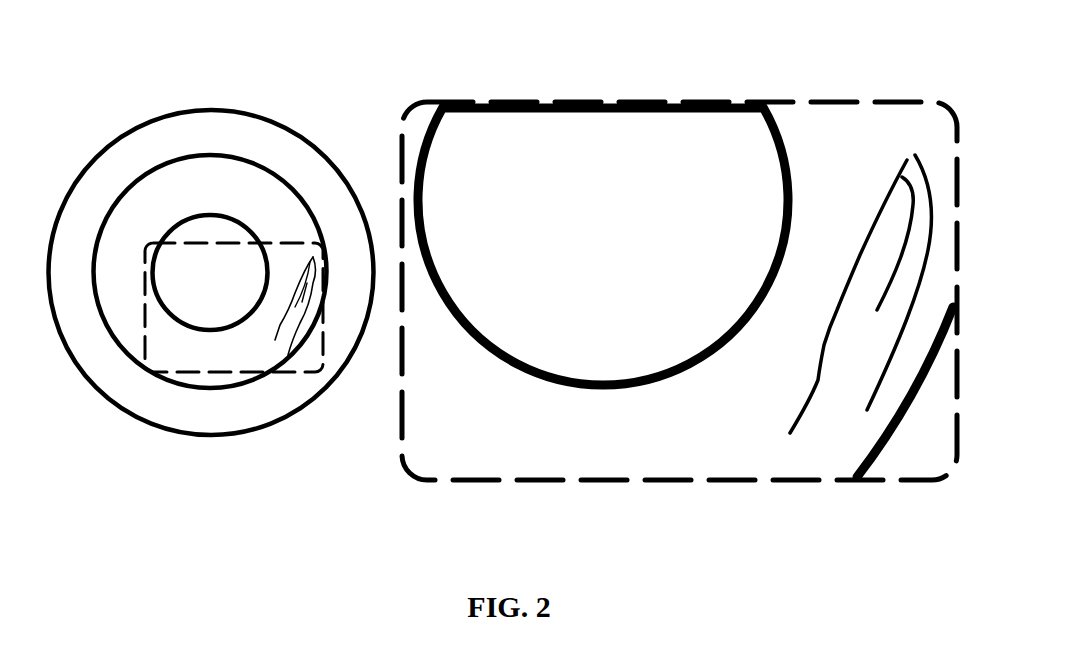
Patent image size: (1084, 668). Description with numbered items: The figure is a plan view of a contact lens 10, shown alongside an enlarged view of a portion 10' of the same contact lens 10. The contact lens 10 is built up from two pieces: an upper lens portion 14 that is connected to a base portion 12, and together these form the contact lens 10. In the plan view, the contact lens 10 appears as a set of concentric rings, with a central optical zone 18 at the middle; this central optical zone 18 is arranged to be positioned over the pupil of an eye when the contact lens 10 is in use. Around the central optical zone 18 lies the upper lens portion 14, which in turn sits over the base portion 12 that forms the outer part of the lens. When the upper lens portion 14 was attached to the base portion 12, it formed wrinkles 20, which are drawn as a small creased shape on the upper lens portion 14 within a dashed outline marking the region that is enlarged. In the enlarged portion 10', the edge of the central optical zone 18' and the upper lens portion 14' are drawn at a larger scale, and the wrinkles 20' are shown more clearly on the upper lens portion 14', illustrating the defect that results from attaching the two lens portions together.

The contact lens 10 is at (211, 276).
The base portion 12 is at (168, 405).
The upper lens portion 14 is at (210, 230).
The central optical zone 18 is at (210, 189).
The wrinkles 20 is at (266, 381).
The portion of the contact lens 10' is at (679, 327).
The upper lens portion 14' is at (886, 302).
The central button (enlarged detail) 18' is at (603, 246).
The wrinkles 20' is at (852, 354).